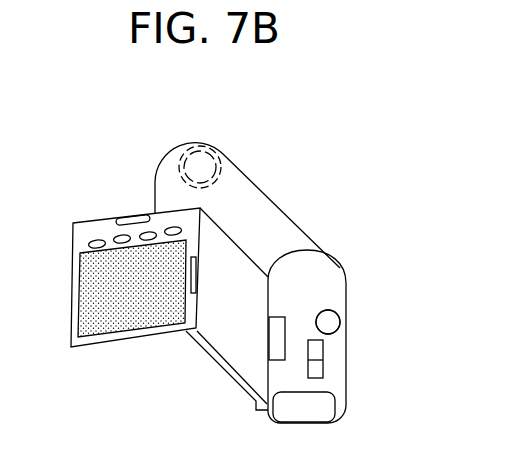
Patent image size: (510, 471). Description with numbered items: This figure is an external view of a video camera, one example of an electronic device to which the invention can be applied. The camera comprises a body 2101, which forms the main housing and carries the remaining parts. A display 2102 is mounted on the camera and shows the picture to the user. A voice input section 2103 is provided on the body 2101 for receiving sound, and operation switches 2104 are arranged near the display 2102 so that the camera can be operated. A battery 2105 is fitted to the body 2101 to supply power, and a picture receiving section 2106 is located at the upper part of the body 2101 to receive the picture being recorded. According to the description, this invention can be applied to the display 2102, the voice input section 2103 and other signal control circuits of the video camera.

The body 2101 is at (265, 220).
The display 2102 is at (127, 313).
The voice input section 2103 is at (315, 282).
The operation switches 2104 is at (128, 222).
The battery 2105 is at (302, 407).
The picture receiving section 2106 is at (200, 146).